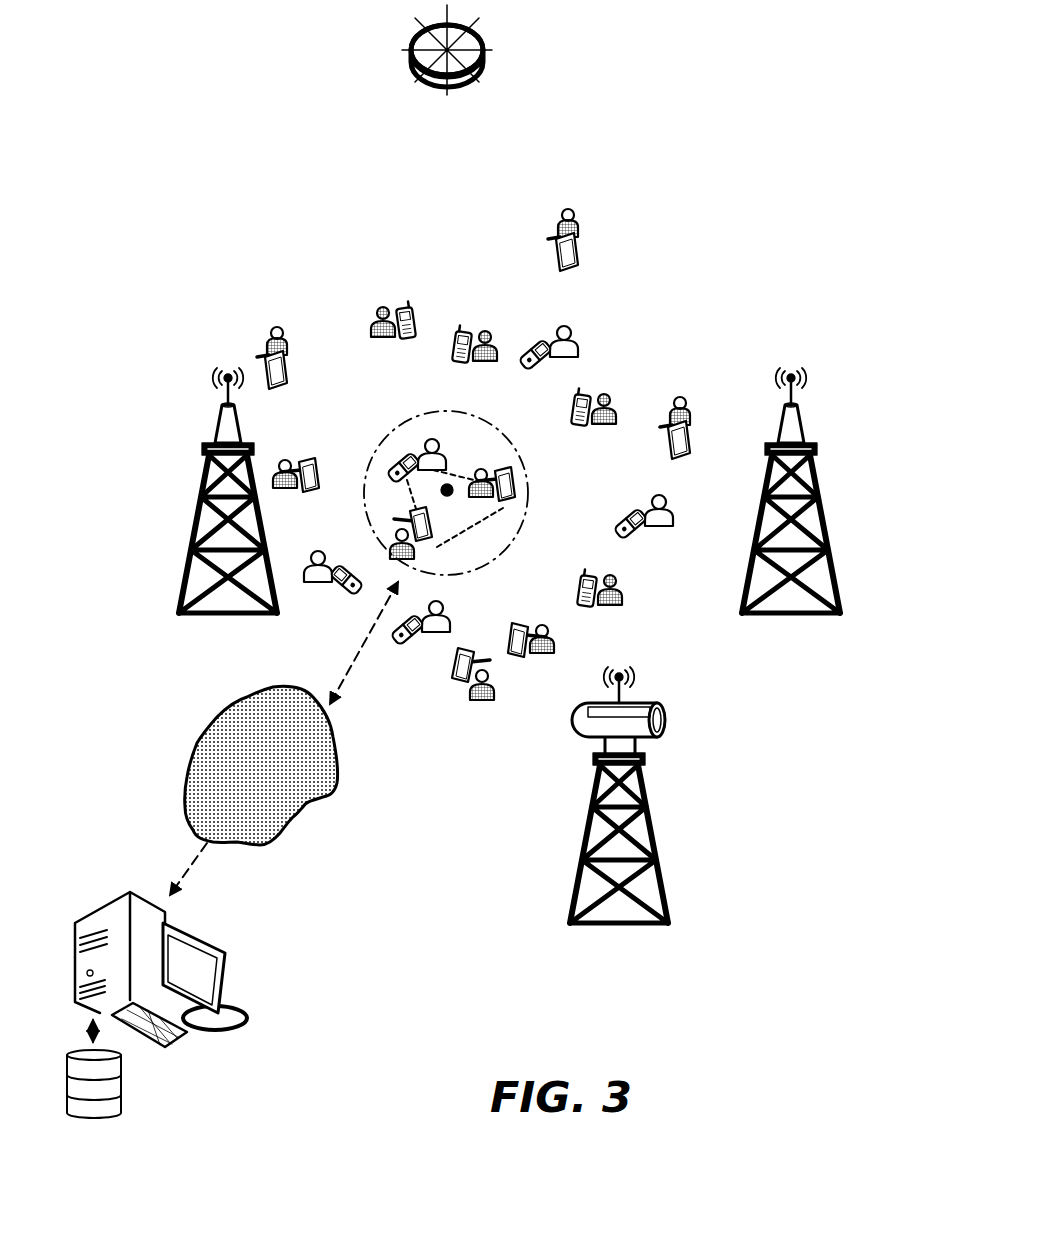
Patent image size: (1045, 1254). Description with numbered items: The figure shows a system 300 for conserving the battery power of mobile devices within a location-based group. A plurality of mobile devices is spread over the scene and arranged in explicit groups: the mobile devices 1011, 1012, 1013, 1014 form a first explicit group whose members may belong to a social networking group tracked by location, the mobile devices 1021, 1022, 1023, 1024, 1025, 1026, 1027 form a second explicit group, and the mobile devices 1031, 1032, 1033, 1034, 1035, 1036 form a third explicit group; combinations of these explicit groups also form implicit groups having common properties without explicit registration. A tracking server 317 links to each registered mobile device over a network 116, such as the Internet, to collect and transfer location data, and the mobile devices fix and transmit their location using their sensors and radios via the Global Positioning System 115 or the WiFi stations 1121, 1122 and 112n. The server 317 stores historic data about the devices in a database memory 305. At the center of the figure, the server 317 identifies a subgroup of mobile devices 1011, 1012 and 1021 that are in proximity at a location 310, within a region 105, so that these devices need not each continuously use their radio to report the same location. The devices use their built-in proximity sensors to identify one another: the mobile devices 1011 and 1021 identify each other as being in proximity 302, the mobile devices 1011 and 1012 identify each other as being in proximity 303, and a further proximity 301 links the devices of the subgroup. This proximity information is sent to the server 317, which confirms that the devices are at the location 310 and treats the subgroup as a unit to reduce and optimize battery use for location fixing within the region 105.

The system 300 is at (635, 192).
The Global Positioning System 115 is at (433, 88).
The WiFi station 1121 is at (191, 490).
The WiFi station 1122 is at (645, 795).
The WiFi station 112n is at (826, 490).
The mobile device 1011 is at (376, 526).
The mobile device 1012 is at (520, 470).
The mobile device 1013 is at (291, 342).
The mobile device 1014 is at (611, 242).
The mobile device 1021 is at (400, 438).
The mobile device 1022 is at (592, 331).
The mobile device 1023 is at (615, 385).
The mobile device 1024 is at (647, 441).
The mobile device 1025 is at (647, 539).
The mobile device 1026 is at (456, 703).
The mobile device 1027 is at (302, 453).
The mobile device 1031 is at (385, 283).
The mobile device 1032 is at (474, 308).
The mobile device 1033 is at (636, 617).
The mobile device 1034 is at (530, 669).
The mobile device 1035 is at (412, 648).
The mobile device 1036 is at (320, 557).
The region 105 is at (495, 430).
The location 310 is at (452, 493).
The proximity 301 is at (465, 465).
The proximity 302 is at (452, 520).
The proximity 303 is at (473, 527).
The network 116 is at (310, 803).
The server 317 is at (95, 900).
The database memory 305 is at (122, 1110).